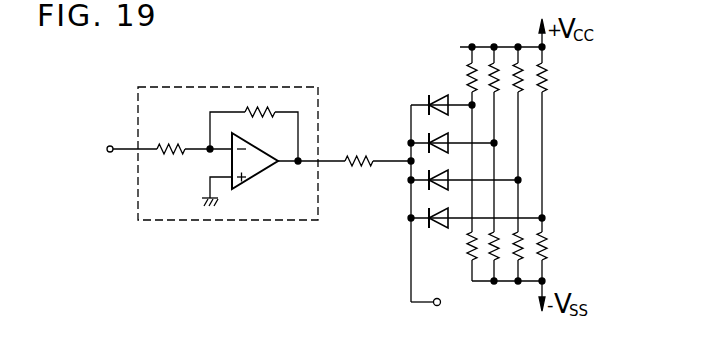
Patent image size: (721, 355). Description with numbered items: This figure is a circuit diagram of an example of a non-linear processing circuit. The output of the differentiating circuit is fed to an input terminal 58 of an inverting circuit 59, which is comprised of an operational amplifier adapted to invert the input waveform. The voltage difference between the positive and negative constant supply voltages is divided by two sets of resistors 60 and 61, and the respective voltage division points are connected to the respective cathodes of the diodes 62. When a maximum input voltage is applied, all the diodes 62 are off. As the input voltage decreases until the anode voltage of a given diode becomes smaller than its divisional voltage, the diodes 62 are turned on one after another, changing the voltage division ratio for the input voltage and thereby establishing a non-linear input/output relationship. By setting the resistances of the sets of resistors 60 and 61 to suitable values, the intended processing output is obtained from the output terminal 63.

The input terminal 58 is at (126, 146).
The inverting circuit 59 is at (190, 220).
The set of resistors 60 is at (553, 55).
The set of resistors 61 is at (553, 227).
The diodes 62 is at (476, 181).
The output terminal 63 is at (441, 303).